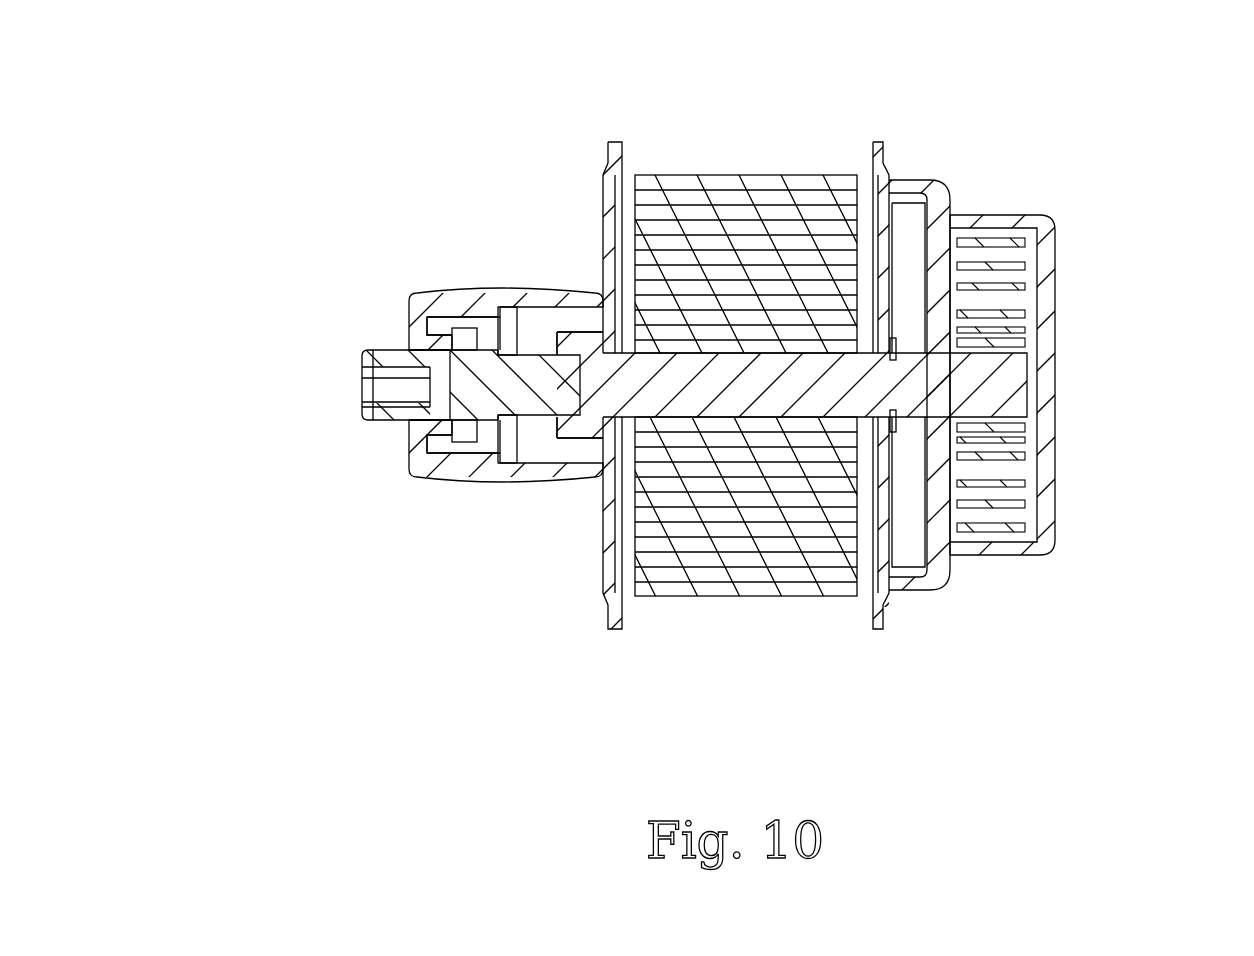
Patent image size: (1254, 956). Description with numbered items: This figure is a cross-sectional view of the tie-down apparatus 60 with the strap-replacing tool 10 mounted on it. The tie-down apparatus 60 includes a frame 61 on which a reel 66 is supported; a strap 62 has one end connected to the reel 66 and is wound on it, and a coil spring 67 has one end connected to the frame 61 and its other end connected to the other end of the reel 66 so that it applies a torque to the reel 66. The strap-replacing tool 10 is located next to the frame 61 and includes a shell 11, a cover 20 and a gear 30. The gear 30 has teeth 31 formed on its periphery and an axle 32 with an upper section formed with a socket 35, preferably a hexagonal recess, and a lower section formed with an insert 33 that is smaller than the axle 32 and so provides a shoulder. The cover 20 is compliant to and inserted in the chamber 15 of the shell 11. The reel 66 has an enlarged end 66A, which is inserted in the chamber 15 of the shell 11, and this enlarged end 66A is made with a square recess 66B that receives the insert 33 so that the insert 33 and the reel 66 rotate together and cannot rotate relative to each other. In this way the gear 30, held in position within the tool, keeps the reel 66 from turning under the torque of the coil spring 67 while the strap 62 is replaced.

The strap-replacing tool 10 is at (386, 296).
The shell 11 is at (420, 311).
The chamber 15 is at (515, 328).
The cover 20 is at (507, 447).
The gear 30 is at (463, 425).
The teeth 31 is at (463, 333).
The axle 32 is at (382, 413).
The insert 33 is at (537, 365).
The socket 35 is at (375, 390).
The tie-down apparatus 60 is at (858, 130).
The frame 61 is at (612, 595).
The strap 62 is at (730, 180).
The reel 66 is at (1020, 405).
The enlarged end 66A is at (580, 347).
The recess 66B is at (580, 388).
The coil spring 67 is at (1020, 285).